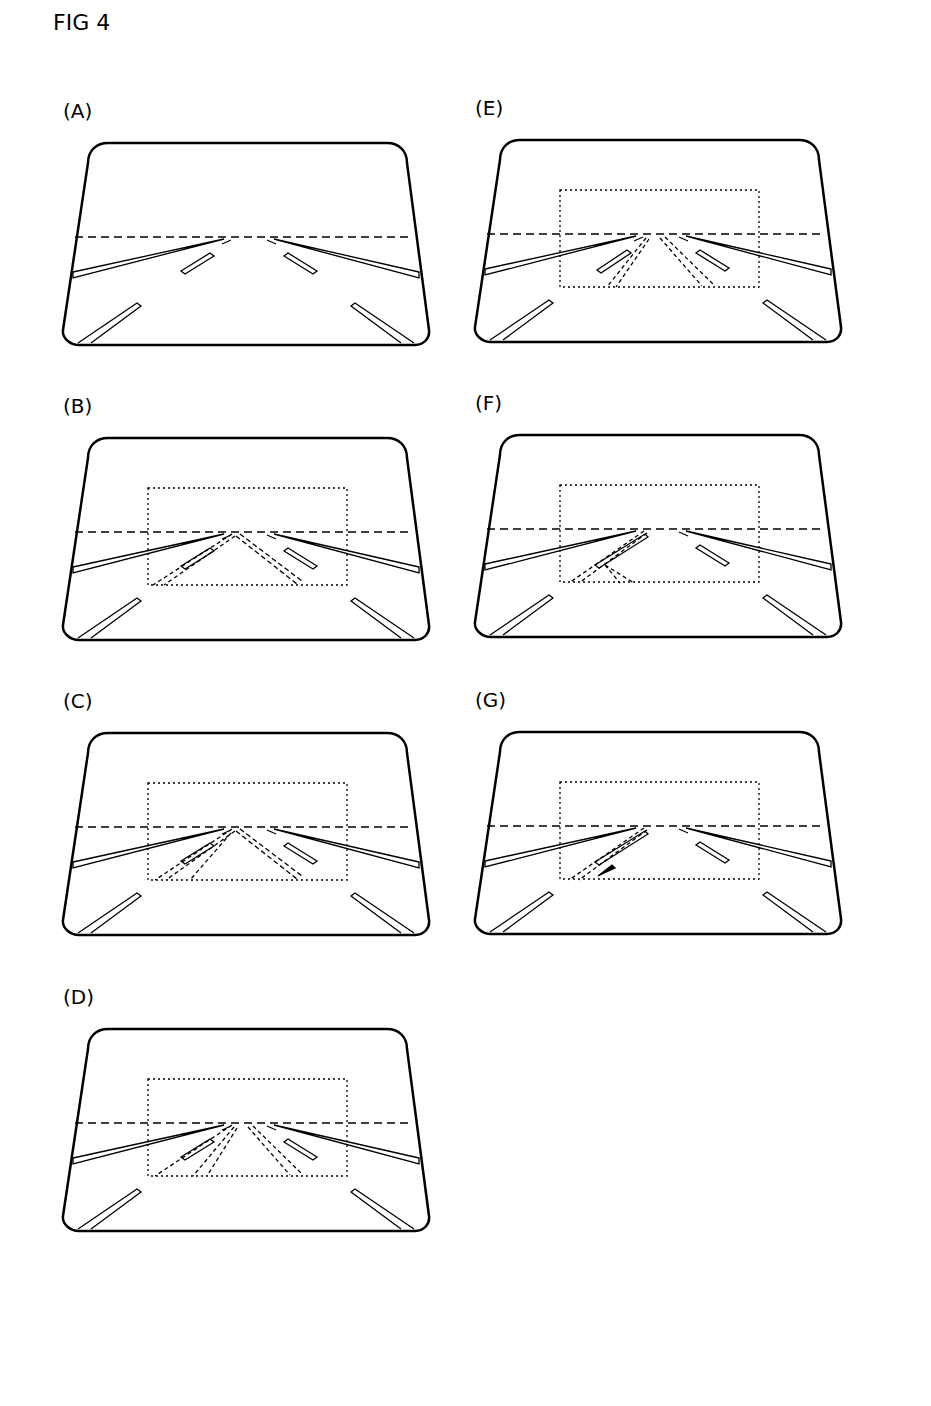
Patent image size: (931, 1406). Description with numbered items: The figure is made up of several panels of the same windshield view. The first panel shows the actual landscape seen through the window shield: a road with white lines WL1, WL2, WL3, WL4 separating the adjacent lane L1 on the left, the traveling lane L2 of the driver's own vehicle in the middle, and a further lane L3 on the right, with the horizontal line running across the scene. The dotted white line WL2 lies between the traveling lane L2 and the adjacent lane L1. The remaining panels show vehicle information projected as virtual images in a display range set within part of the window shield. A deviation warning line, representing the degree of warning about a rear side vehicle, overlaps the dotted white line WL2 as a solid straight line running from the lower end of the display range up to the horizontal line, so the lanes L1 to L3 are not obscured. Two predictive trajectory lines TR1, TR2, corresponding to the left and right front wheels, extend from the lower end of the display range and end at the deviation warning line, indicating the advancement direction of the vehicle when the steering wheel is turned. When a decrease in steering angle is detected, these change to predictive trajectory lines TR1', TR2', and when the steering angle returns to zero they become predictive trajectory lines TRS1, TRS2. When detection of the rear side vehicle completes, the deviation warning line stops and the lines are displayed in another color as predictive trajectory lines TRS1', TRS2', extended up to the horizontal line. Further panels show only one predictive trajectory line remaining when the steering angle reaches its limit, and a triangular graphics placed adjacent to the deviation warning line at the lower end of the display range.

The white line WL1 is at (105, 263).
The dotted white line WL2 is at (188, 266).
The white line WL3 is at (298, 266).
The white line WL4 is at (382, 263).
The adjacent lane L1 is at (96, 306).
The traveling lane L2 is at (245, 321).
The lane L3 is at (394, 306).
The predictive trajectory line TR1 is at (194, 581).
The predictive trajectory line TR2 is at (271, 581).
The predictive trajectory line TR1' is at (195, 876).
The predictive trajectory line TR2' is at (274, 876).
The predictive trajectory line TRS1 is at (196, 1172).
The predictive trajectory line TRS2 is at (284, 1172).
The predictive trajectory line TRS1' is at (614, 285).
The predictive trajectory line TRS2' is at (697, 285).